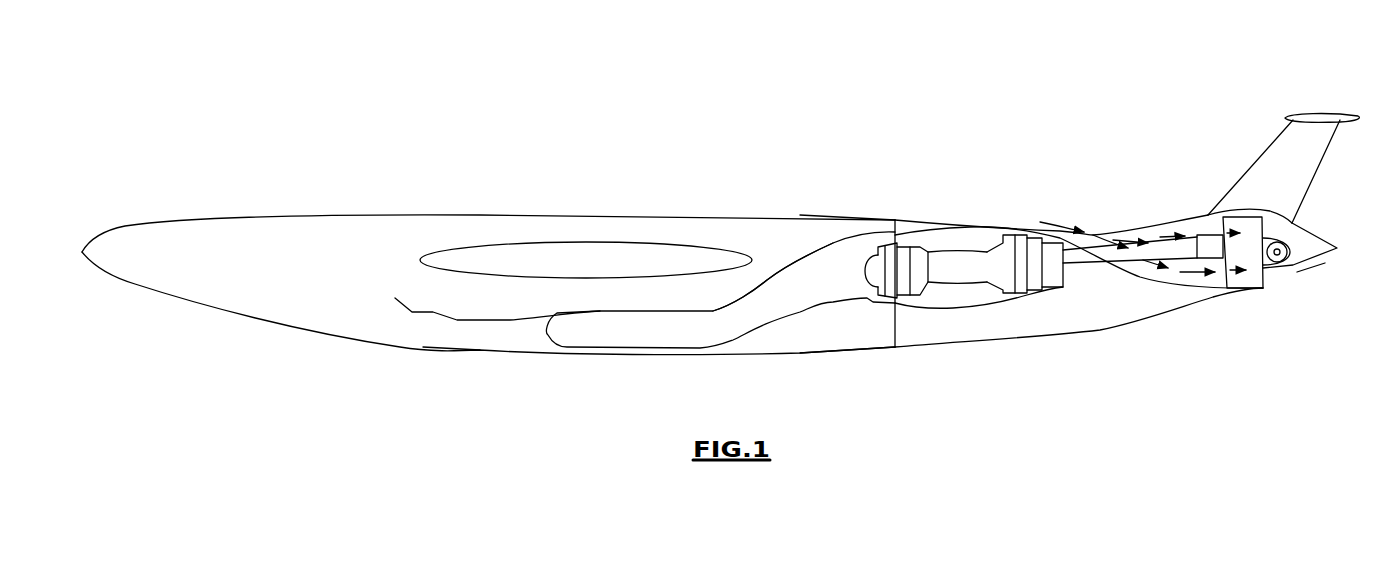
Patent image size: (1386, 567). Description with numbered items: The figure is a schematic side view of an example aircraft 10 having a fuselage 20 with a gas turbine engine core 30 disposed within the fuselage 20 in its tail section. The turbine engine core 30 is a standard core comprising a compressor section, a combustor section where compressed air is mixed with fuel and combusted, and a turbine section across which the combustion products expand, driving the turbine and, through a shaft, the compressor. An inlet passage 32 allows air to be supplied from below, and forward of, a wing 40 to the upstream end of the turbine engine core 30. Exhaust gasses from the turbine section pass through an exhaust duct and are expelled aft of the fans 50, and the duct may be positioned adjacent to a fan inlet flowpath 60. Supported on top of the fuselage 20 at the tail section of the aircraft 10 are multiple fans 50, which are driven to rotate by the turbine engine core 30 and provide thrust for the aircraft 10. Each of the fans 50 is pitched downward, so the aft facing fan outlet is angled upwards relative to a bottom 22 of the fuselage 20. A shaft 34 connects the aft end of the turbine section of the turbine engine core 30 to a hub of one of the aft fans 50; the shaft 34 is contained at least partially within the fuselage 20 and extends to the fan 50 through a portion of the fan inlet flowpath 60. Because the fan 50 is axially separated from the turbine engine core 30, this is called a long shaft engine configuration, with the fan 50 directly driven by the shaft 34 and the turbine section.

The aircraft 10 is at (558, 133).
The fuselage 20 is at (846, 218).
The bottom of the fuselage 22 is at (862, 349).
The gas turbine engine core 30 is at (970, 255).
The inlet passage 32 is at (747, 328).
The shaft 34 is at (1138, 255).
The wing 40 is at (630, 244).
The fans 50 is at (1240, 292).
The fan inlet flowpath 60 is at (1107, 232).